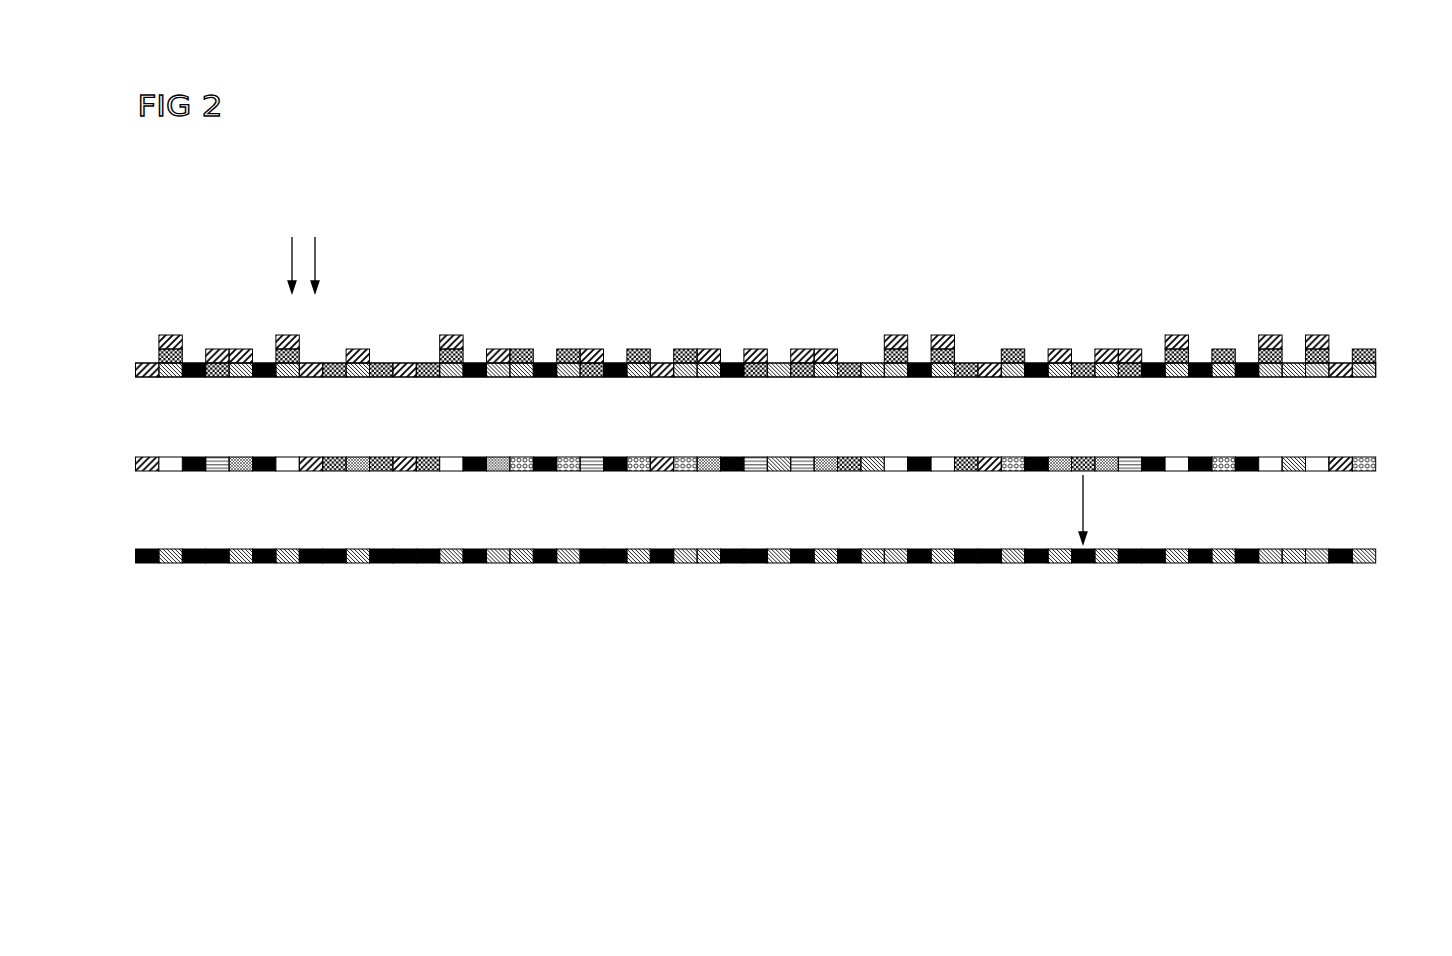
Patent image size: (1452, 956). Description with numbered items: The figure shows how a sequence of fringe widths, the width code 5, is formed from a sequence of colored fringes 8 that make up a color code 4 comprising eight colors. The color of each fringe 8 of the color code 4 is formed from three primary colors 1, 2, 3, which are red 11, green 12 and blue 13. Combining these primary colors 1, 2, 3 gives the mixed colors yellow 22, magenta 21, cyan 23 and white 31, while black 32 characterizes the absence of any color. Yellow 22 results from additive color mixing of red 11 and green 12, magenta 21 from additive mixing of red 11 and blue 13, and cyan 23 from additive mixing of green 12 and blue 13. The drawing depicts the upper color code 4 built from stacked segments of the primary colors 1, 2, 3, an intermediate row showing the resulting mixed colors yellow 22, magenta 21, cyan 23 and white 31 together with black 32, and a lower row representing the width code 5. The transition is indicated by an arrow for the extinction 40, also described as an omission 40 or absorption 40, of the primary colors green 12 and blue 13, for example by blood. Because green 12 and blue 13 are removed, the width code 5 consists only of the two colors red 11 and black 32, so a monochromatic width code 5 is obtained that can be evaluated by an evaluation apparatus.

The primary color 1 is at (1390, 337).
The primary color 2 is at (1393, 352).
The primary color 3 is at (1393, 369).
The color code 4 is at (1393, 464).
The width code 5 is at (1393, 557).
The colored fringe 8 is at (290, 258).
The red 11 is at (173, 378).
The green 12 is at (185, 350).
The blue 13 is at (168, 335).
The magenta 21 is at (360, 472).
The yellow 22 is at (523, 472).
The cyan 23 is at (590, 472).
The white 31 is at (172, 472).
The black 32 is at (735, 472).
The extinction 40 is at (1083, 505).